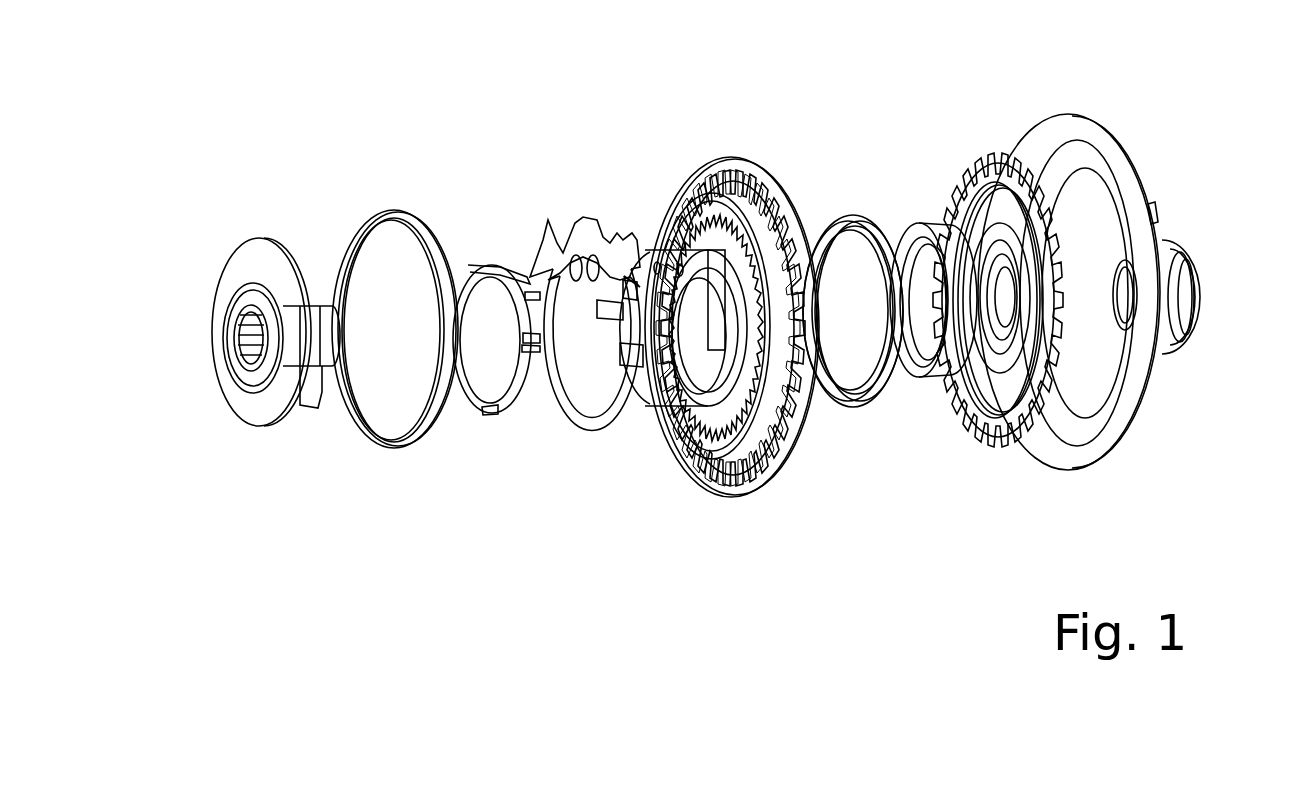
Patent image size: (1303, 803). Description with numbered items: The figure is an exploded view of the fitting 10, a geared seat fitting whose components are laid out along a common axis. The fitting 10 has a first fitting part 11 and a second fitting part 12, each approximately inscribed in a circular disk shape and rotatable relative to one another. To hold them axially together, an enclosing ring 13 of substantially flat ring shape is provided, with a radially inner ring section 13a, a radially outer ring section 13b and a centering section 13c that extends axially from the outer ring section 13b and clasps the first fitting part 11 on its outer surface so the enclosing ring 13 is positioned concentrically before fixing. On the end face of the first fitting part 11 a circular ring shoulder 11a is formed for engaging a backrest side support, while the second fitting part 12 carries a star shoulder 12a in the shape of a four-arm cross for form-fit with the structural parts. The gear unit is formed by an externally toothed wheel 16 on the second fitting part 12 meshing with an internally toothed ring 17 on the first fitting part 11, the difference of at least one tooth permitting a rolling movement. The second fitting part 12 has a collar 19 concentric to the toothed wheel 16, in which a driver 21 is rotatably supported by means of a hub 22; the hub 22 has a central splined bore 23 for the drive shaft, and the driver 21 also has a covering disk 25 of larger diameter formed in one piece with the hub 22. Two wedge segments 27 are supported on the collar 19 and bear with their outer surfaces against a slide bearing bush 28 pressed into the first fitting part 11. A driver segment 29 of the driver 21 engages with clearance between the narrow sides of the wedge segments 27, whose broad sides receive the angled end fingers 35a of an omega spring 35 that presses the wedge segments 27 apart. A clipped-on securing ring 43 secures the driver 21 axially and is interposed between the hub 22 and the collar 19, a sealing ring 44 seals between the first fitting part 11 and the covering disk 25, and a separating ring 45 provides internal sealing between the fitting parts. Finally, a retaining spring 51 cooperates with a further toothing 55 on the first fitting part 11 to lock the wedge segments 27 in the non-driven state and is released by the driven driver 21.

The fitting 10 is at (492, 121).
The first fitting part 11 is at (729, 342).
The ring shoulder 11a is at (762, 192).
The second fitting part 12 is at (981, 293).
The star shoulder 12a is at (993, 178).
The enclosing ring 13 is at (1113, 305).
The inner ring section 13a is at (1095, 160).
The outer ring section 13b is at (1045, 138).
The centering section 13c is at (1157, 207).
The externally toothed wheel 16 is at (946, 168).
The internally toothed ring 17 is at (707, 160).
The collar 19 is at (1003, 328).
The driver 21 is at (240, 350).
The hub 22 is at (325, 303).
The bore 23 is at (232, 345).
The covering disk 25 is at (257, 243).
The wedge segments 27 is at (662, 372).
The slide bearing bush 28 is at (931, 372).
The driver segment 29 is at (306, 405).
The omega spring 35 is at (515, 336).
The end finger 35a is at (530, 276).
The securing ring 43 is at (1170, 357).
The sealing ring 44 is at (397, 450).
The separating ring 45 is at (838, 420).
The retaining spring 51 is at (590, 428).
The toothing 55 is at (680, 230).